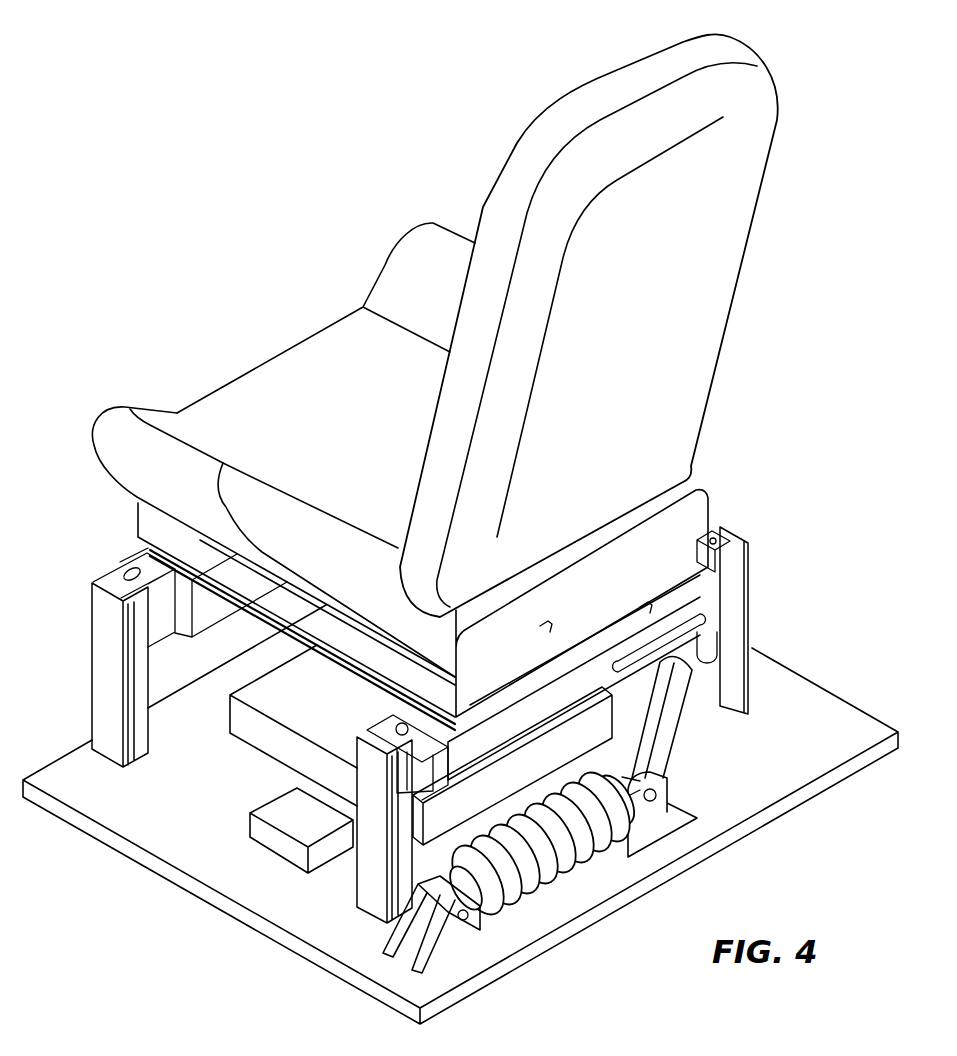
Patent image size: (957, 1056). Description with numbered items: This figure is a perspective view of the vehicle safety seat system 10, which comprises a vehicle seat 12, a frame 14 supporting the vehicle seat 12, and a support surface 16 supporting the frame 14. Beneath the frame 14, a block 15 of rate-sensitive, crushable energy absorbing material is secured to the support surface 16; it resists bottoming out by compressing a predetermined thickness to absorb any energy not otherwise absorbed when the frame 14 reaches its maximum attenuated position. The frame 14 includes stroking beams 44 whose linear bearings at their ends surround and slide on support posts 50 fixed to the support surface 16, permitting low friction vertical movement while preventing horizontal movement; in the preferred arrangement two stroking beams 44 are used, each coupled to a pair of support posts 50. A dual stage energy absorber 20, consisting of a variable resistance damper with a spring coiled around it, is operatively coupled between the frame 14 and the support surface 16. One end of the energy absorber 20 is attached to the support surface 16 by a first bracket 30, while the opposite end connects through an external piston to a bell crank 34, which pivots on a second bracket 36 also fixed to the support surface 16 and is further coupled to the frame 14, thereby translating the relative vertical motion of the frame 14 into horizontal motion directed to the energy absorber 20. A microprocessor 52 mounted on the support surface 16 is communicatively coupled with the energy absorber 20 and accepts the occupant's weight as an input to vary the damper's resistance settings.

The vehicle safety seat system 10 is at (240, 292).
The vehicle seat 12 is at (603, 78).
The frame 14 is at (713, 512).
The block 15 is at (277, 740).
The support surface 16 is at (807, 678).
The dual stage energy absorber 20 is at (550, 887).
The first bracket 30 is at (455, 937).
The bell crank 34 is at (663, 743).
The second bracket 36 is at (660, 820).
The stroking beam 44 is at (533, 715).
The support post 50 is at (92, 660).
The microprocessor 52 is at (260, 832).